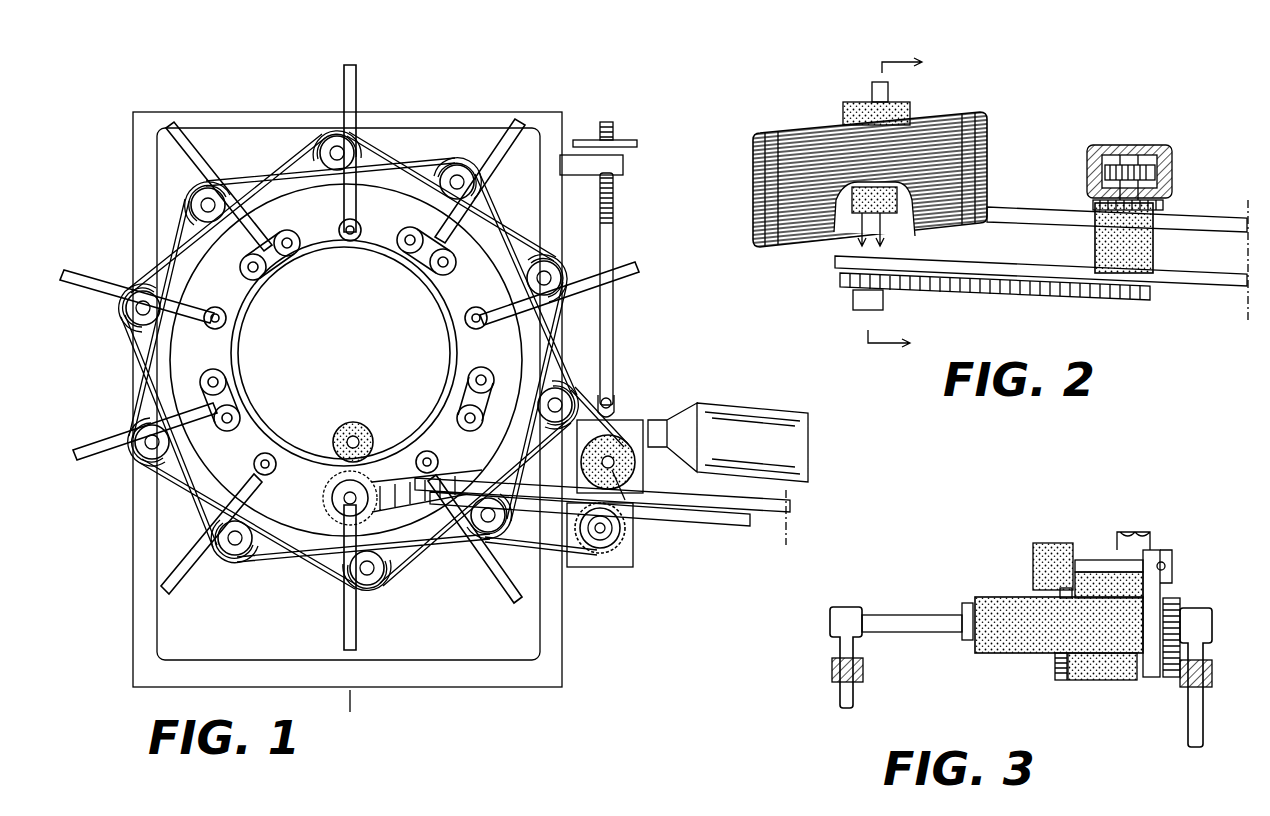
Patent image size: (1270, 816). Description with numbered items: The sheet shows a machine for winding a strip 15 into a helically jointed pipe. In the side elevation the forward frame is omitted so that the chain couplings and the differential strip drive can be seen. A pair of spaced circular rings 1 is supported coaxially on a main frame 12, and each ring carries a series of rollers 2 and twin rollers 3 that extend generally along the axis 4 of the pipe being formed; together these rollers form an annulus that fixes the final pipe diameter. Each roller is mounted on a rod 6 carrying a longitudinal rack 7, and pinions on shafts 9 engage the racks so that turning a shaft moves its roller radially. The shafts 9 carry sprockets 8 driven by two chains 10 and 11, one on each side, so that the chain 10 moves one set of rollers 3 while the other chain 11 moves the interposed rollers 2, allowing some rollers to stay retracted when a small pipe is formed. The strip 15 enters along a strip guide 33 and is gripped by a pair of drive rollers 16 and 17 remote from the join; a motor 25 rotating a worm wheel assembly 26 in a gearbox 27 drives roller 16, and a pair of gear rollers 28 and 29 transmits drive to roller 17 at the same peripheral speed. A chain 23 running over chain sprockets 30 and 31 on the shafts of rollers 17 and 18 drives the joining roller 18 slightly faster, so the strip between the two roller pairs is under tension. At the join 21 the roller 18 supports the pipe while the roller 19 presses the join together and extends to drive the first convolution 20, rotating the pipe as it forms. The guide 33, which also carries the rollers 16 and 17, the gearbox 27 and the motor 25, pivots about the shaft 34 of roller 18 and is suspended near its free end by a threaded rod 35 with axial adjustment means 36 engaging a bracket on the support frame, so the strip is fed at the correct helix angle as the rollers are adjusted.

In FIG. 1, the circular ring 1 is at (490, 240).
In FIG. 3, the circular ring 1 is at (830, 670).
In FIG. 1, the roller 2 is at (350, 246).
In FIG. 1, the twin rollers 3 is at (272, 266).
In FIG. 2, the twin rollers 3 is at (885, 204).
In FIG. 1, the axis 4 is at (355, 350).
In FIG. 1, the rod 6 is at (172, 126).
In FIG. 3, the rod 6 is at (855, 704).
In FIG. 1, the longitudinal rack 7 is at (332, 97).
In FIG. 1, the sprocket 8 is at (355, 150).
In FIG. 1, the shaft 9 is at (320, 153).
In FIG. 1, the chain 10 is at (238, 180).
In FIG. 1, the chain 11 is at (158, 518).
In FIG. 1, the main frame 12 is at (418, 112).
In FIG. 1, the strip 15 is at (792, 516).
In FIG. 1, the drive roller 16 is at (645, 462).
In FIG. 2, the drive roller 16 is at (1156, 216).
In FIG. 3, the drive roller 16 is at (1098, 572).
In FIG. 1, the drive roller 17 is at (582, 562).
In FIG. 3, the drive roller 17 is at (1105, 680).
In FIG. 1, the joining roller 18 is at (395, 542).
In FIG. 2, the joining roller 18 is at (842, 112).
In FIG. 3, the joining roller 18 is at (1010, 655).
In FIG. 1, the joining roller 19 is at (368, 426).
In FIG. 2, the joining roller 19 is at (848, 202).
In FIG. 3, the joining roller 19 is at (1050, 545).
In FIG. 1, the first convolution 20 is at (243, 348).
In FIG. 2, the first convolution 20 is at (990, 176).
In FIG. 2, the join 21 is at (900, 216).
In FIG. 1, the chain 23 is at (505, 535).
In FIG. 2, the chain 23 is at (996, 290).
In FIG. 3, the chain 23 is at (1176, 606).
In FIG. 1, the motor 25 is at (730, 406).
In FIG. 2, the worm wheel assembly 26 is at (1158, 172).
In FIG. 2, the gearbox 27 is at (1086, 162).
In FIG. 1, the gear roller 28 is at (630, 492).
In FIG. 2, the gear roller 28 is at (1092, 205).
In FIG. 3, the gear roller 28 is at (1058, 594).
In FIG. 1, the gear roller 29 is at (622, 560).
In FIG. 3, the gear roller 29 is at (1059, 680).
In FIG. 2, the chain sprocket 30 is at (1153, 304).
In FIG. 2, the chain sprocket 31 is at (847, 298).
In FIG. 1, the strip guide 33 is at (710, 520).
In FIG. 2, the strip guide 33 is at (1192, 287).
In FIG. 3, the strip guide 33 is at (962, 640).
In FIG. 1, the shaft 34 is at (335, 478).
In FIG. 3, the shaft 34 is at (898, 618).
In FIG. 1, the threaded rod 35 is at (615, 234).
In FIG. 1, the axial adjustment means 36 is at (624, 140).